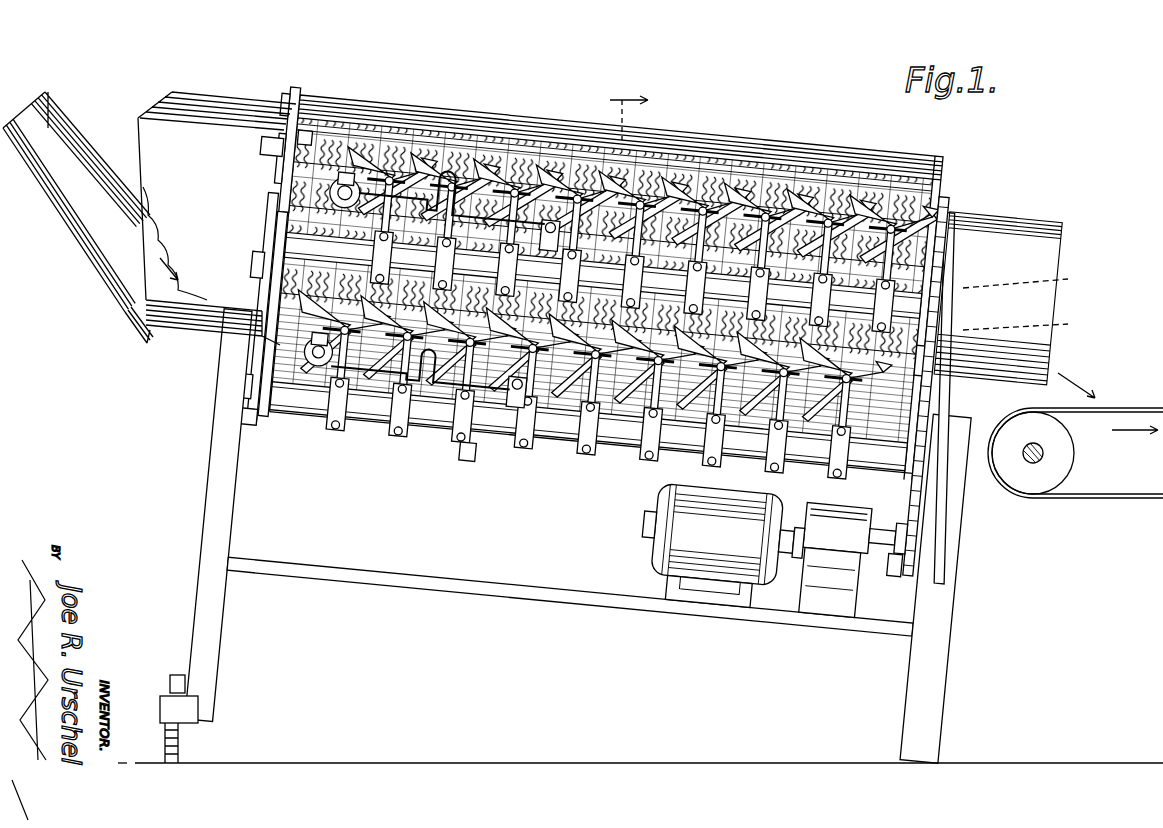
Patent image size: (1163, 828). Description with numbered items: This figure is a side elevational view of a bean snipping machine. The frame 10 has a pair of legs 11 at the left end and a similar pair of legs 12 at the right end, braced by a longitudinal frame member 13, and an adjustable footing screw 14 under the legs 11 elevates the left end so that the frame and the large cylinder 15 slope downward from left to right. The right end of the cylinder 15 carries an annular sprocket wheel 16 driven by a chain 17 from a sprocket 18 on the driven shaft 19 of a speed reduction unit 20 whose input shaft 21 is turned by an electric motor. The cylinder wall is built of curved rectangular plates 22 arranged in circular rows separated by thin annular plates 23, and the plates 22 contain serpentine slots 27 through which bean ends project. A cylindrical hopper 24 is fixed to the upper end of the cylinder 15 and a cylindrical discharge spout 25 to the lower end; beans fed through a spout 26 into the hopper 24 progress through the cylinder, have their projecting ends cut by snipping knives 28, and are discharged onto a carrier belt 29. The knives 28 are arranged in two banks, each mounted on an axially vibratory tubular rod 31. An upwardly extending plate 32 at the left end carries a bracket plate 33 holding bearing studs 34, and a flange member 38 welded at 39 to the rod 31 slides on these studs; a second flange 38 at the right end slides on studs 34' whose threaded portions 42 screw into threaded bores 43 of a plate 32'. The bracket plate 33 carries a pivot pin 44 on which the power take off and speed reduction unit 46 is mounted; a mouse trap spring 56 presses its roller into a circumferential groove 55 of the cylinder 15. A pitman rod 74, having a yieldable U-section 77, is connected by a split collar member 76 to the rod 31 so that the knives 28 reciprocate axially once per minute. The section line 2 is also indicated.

The section line 2 is at (610, 100).
The frame 10 is at (200, 468).
The legs 11 is at (205, 525).
The legs 12 is at (945, 625).
The frame member 13 is at (420, 592).
The adjustable footing screw 14 is at (170, 675).
The cylinder 15 is at (830, 145).
The annular sprocket wheel 16 is at (955, 200).
The chain 17 is at (920, 518).
The sprocket 18 is at (920, 554).
The driven shaft 19 is at (888, 555).
The speed reduction unit 20 is at (850, 520).
The input shaft 21 is at (797, 520).
The curved rectangular plates 22 is at (770, 158).
The annular plate 23 is at (898, 150).
The cylindrical hopper 24 is at (220, 95).
The cylindrical discharge spout 25 is at (1036, 230).
The spout 26 is at (48, 95).
The serpentine slots 27 is at (560, 140).
The snipping knives 28 is at (403, 150).
The carrier belt 29 is at (1137, 408).
The tubular rod 31 is at (606, 455).
The plate 32 is at (256, 313).
The plate 32' is at (1002, 261).
The bracket plate 33 is at (270, 210).
The bearing studs 34 is at (271, 303).
The bearing studs 34' is at (1017, 381).
The flange member 38 is at (290, 250).
The weld 39 is at (950, 316).
The threaded portions 42 is at (1031, 304).
The threaded bores 43 is at (945, 290).
The pivot pin 44 is at (276, 160).
The power take off and speed reduction unit 46 is at (352, 215).
The circumferential groove 55 is at (296, 90).
The mouse trap spring 56 is at (290, 165).
The pitman rod 74 is at (430, 448).
The split collar member 76 is at (575, 250).
The U-section 77 is at (452, 160).